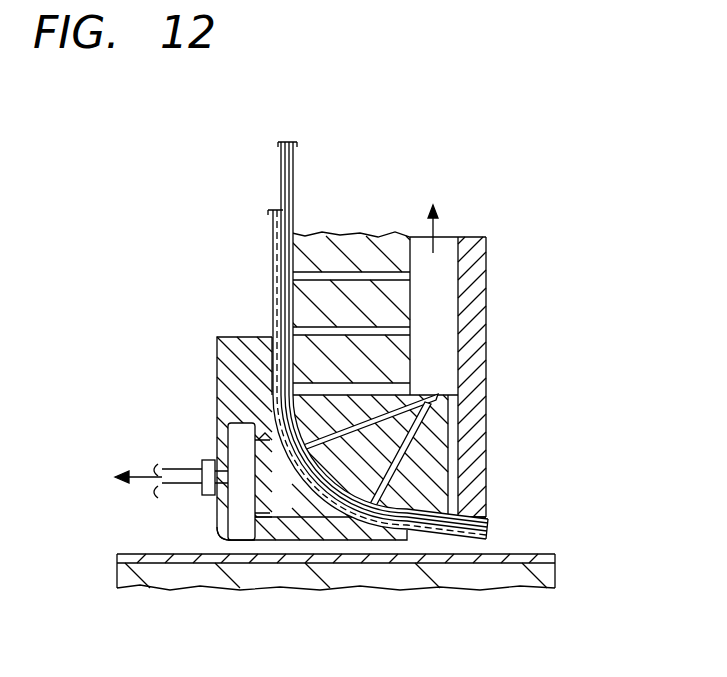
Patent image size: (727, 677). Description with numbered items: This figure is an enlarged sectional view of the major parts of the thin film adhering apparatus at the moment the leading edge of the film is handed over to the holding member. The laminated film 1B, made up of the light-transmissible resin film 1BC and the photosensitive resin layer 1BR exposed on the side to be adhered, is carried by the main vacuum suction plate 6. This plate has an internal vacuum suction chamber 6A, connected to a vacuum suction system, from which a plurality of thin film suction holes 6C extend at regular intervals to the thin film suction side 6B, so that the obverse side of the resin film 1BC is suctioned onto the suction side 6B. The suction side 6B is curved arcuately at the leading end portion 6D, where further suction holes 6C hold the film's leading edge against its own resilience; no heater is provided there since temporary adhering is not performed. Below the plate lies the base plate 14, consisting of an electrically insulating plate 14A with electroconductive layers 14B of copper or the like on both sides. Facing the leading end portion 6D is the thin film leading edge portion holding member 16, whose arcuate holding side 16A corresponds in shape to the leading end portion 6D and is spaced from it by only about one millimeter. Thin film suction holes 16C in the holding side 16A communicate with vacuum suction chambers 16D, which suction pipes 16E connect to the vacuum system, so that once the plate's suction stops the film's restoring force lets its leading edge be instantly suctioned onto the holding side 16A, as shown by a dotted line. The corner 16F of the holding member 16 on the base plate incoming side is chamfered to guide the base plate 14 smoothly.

The laminated film 1B is at (378, 304).
The photosensitive resin layer 1BR is at (280, 167).
The light-transmissible resin film 1BC is at (295, 163).
The main vacuum suction plate 6 is at (374, 395).
The vacuum suction chamber 6A is at (414, 237).
The thin film suction side 6B is at (271, 262).
The thin film suction holes 6C is at (356, 332).
The leading end portion 6D is at (430, 523).
The base plate 14 is at (397, 547).
The electrically insulating plate 14A is at (560, 567).
The electroconductive layers 14B is at (545, 552).
The thin film leading edge portion holding member 16 is at (251, 466).
The holding side 16A is at (280, 352).
The thin film suction holes 16C is at (270, 445).
The vacuum suction chambers 16D is at (232, 508).
The suction pipes 16E is at (182, 465).
The corner 16F is at (218, 536).